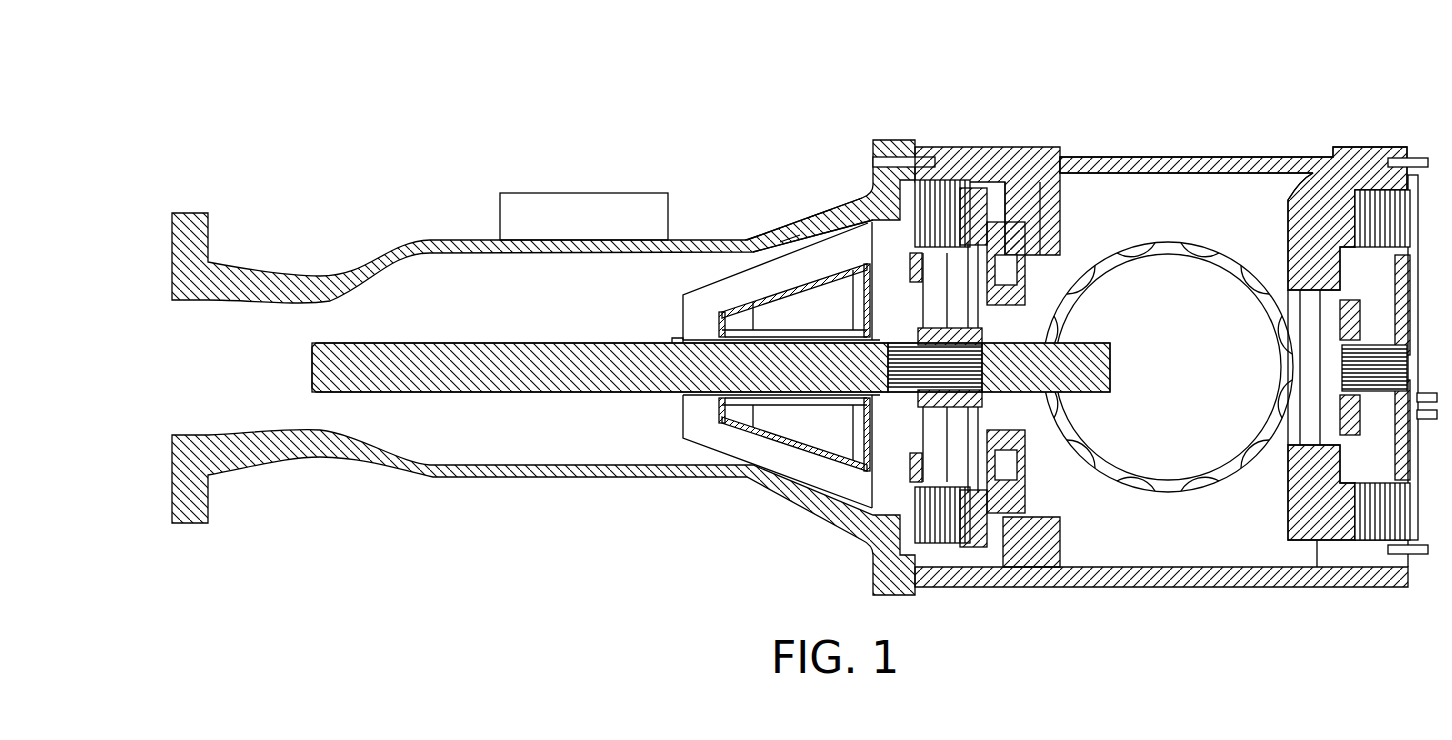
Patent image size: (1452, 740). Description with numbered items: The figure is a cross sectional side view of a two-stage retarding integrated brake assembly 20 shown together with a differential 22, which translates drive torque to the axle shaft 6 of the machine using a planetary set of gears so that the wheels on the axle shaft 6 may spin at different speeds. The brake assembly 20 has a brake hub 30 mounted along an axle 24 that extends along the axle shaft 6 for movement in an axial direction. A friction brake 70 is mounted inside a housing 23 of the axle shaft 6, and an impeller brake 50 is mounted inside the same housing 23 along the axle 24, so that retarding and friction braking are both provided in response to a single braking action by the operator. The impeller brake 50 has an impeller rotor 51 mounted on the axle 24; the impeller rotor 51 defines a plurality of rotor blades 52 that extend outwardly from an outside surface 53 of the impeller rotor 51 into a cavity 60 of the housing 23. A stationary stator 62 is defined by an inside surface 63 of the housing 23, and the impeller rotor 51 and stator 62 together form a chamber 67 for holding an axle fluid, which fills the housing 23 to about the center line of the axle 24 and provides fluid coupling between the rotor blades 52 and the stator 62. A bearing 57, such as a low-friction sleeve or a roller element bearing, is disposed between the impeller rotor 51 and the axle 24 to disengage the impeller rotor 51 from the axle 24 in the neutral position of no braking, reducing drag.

The axle shaft 6 is at (1268, 96).
The brake assembly 20 is at (903, 86).
The differential 22 is at (1157, 240).
The housing 23 is at (540, 478).
The axle 24 is at (465, 390).
The brake hub 30 is at (960, 470).
The impeller brake 50 is at (821, 239).
The impeller rotor 51 is at (828, 322).
The rotor blades 52 is at (762, 433).
The outside surface 53 is at (728, 408).
The bearing 57 is at (678, 356).
The cavity 60 is at (697, 268).
The stator 62 is at (737, 268).
The inside surface 63 is at (755, 238).
The chamber 67 is at (792, 253).
The friction brake 70 is at (957, 175).